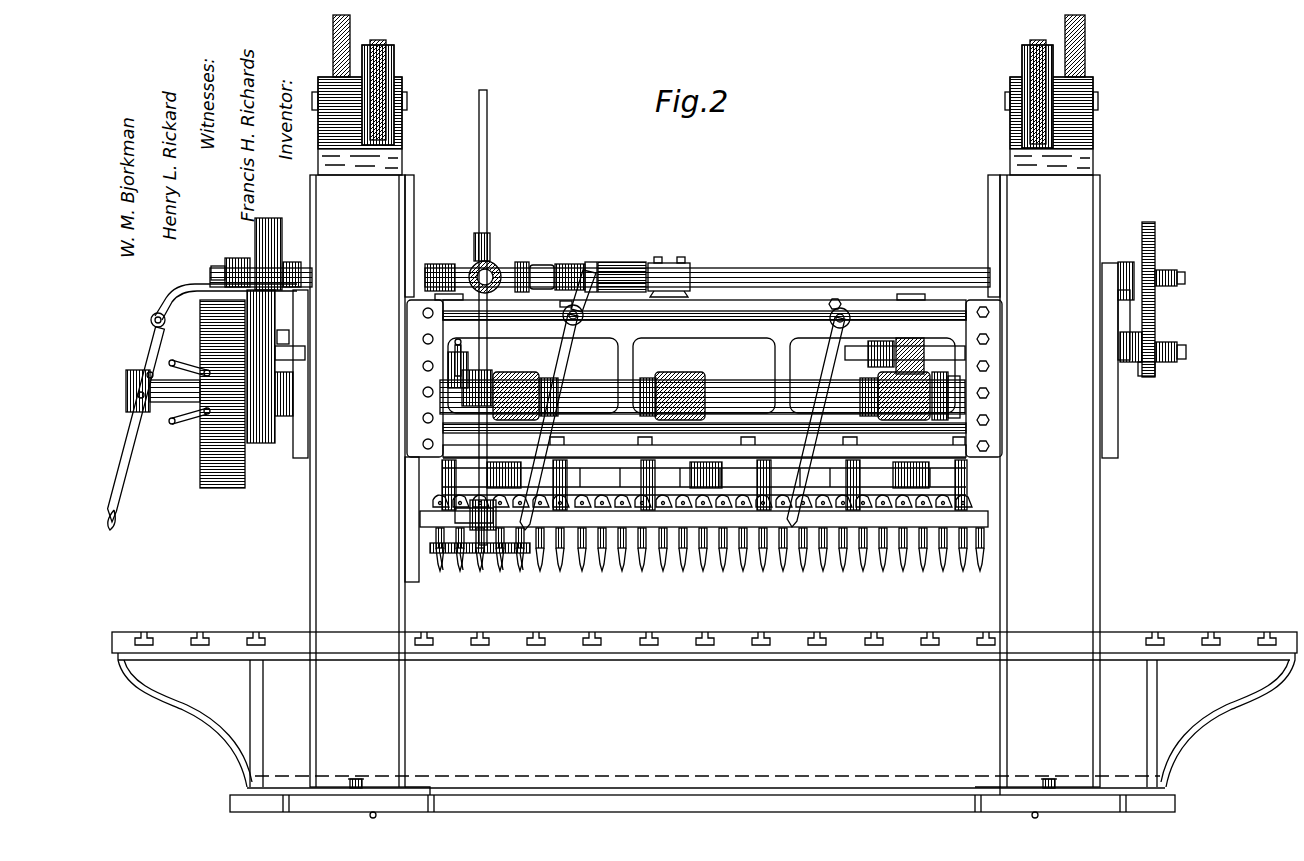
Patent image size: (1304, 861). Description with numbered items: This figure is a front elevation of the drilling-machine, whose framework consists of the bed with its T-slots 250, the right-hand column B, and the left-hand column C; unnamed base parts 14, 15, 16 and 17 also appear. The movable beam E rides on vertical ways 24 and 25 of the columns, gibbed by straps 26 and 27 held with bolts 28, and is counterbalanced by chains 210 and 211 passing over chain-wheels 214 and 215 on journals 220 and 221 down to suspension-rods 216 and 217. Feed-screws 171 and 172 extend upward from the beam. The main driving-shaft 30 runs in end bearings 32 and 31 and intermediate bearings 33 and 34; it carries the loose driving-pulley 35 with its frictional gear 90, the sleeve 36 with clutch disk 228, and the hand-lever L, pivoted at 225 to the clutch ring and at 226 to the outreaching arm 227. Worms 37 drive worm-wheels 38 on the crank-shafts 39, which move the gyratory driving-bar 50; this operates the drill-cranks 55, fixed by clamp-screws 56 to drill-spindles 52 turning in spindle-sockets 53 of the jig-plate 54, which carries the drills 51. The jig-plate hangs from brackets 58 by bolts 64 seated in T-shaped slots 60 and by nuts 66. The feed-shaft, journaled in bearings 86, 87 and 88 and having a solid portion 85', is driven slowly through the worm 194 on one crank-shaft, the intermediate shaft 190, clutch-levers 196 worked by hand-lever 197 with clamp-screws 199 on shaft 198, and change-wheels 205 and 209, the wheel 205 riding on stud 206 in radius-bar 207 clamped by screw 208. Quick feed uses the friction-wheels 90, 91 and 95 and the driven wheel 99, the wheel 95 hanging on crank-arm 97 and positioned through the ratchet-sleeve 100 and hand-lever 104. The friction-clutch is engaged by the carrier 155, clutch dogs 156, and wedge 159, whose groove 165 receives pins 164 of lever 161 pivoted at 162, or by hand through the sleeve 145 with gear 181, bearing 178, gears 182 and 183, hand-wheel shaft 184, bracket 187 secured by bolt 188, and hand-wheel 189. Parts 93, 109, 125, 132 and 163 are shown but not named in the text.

The base 14 is at (712, 808).
The base foot 15 is at (985, 795).
The base foot 16 is at (415, 800).
The bolt 17 is at (356, 778).
The vertical way 24 is at (988, 222).
The vertical way 25 is at (414, 205).
The strap 26 is at (990, 380).
The strap 27 is at (410, 372).
The bolts 28 is at (423, 444).
The main driving-shaft 30 is at (130, 392).
The step-bearing 31 is at (952, 408).
The bearing 32 is at (293, 445).
The intermediate bearing 33 is at (800, 380).
The intermediate bearing 34 is at (598, 380).
The driving-pulley 35 is at (225, 490).
The sleeve 36 is at (183, 405).
The worms 37 is at (516, 374).
The worm-wheels 38 is at (545, 380).
The crank-shafts 39 is at (909, 294).
The gyratory driving-bar 50 is at (590, 492).
The drills 51 is at (825, 562).
The drill-spindles 52 is at (746, 562).
The spindle-sockets 53 is at (700, 562).
The jig-plate 54 is at (975, 520).
The drill-cranks 55 is at (737, 505).
The clamp-screws 56 is at (680, 520).
The brackets 58 is at (630, 472).
The T-shaped slots 60 is at (704, 477).
The bolts 64 is at (860, 452).
The nuts 66 is at (704, 519).
The solid shaft 85' is at (600, 264).
The bearing 86 is at (1110, 262).
The bearing 87 is at (292, 262).
The bearing 88 is at (668, 263).
The frictional gear 90 is at (243, 388).
The reversing friction-wheel 91 is at (262, 445).
The clutch 93 is at (294, 412).
The principal intermediate friction-wheel 95 is at (306, 350).
The crank-arm 97 is at (290, 345).
The driven friction-wheel 99 is at (280, 224).
The ratchet-sleeve 100 is at (462, 380).
The hand-lever 104 is at (450, 356).
The lever 109 is at (458, 341).
The sleeve 125 is at (626, 265).
The hub 132 is at (240, 260).
The sleeve 145 is at (442, 264).
The carrier 155 is at (524, 262).
The clutch dogs 156 is at (540, 265).
The conical sleeve 159 is at (570, 268).
The wedge-actuating lever 161 is at (572, 330).
The pivot 162 is at (583, 311).
The pin 163 is at (560, 305).
The pins 164 is at (592, 270).
The circumferential groove 165 is at (590, 262).
The feed-screw 171 is at (1085, 32).
The feed-screw 172 is at (333, 32).
The bearing 178 is at (490, 290).
The gear 181 is at (464, 262).
The gear 182 is at (474, 290).
The pinion 183 is at (488, 262).
The hand-wheel shaft 184 is at (487, 163).
The bracket 187 is at (455, 516).
The bolt 188 is at (405, 493).
The hand-wheel 189 is at (462, 556).
The intermediate shaft 190 is at (942, 382).
The worm 194 is at (910, 340).
The clutch-levers 196 is at (872, 341).
The hand-lever 197 is at (832, 340).
The shaft 198 is at (850, 314).
The clamp-screws 199 is at (830, 304).
The intermediate wheel 205 is at (1146, 376).
The stud 206 is at (1180, 352).
The radius-bar 207 is at (1131, 310).
The clamp-screw 208 is at (1155, 332).
The change-wheel 209 is at (1149, 222).
The counterbalance-chain 210 is at (1038, 45).
The counterbalance-chain 211 is at (380, 45).
The chain-wheel 214 is at (1022, 60).
The chain-wheel 215 is at (394, 64).
The suspension-rod 216 is at (1035, 812).
The suspension-rod 217 is at (359, 806).
The shaft 220 is at (1098, 104).
The shaft 221 is at (407, 104).
The pivot 225 is at (139, 398).
The pivot 226 is at (151, 315).
The outreaching arm 227 is at (185, 284).
The disk 228 is at (204, 430).
The T-slots 250 is at (590, 632).
The right-hand column B is at (1050, 481).
The left-hand column C is at (357, 481).
The movable beam E is at (758, 303).
The hand-lever L is at (118, 470).